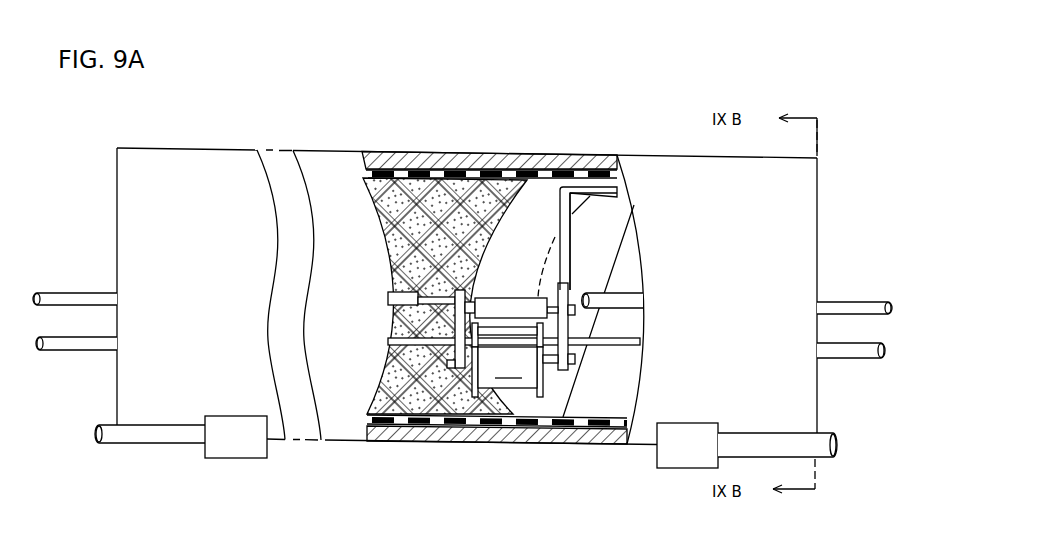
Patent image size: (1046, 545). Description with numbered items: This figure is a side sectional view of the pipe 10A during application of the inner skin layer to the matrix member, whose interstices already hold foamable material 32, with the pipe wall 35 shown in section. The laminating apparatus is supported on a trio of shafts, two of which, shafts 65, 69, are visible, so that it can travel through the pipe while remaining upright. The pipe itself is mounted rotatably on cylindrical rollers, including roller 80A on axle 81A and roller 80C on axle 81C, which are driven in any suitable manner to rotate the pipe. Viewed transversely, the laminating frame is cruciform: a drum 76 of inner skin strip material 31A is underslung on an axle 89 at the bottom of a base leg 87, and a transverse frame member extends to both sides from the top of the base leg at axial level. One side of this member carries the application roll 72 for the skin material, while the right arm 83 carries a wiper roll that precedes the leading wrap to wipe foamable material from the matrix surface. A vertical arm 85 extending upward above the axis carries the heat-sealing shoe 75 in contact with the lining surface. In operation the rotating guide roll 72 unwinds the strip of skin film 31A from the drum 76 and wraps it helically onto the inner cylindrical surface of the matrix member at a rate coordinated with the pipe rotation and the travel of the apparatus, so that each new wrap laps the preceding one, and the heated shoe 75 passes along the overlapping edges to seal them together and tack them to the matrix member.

The heat transfer tube assembly 10A is at (500, 155).
The foamable material 32 is at (455, 200).
The outer wall 35 is at (397, 170).
The shaft 65 is at (68, 293).
The shaft 69 is at (62, 350).
The application roll 72 is at (494, 304).
The heat-sealing shoe 75 is at (580, 201).
The drum 76 is at (541, 388).
The right arm 83 is at (392, 311).
The vertical arm 85 is at (565, 262).
The base leg 87 is at (575, 330).
The axle 89 is at (572, 360).
The inner skin strip material 31A is at (507, 367).
The roller 80A is at (664, 462).
The roller 80C is at (258, 458).
The axle 81A is at (820, 433).
The axle 81C is at (150, 443).